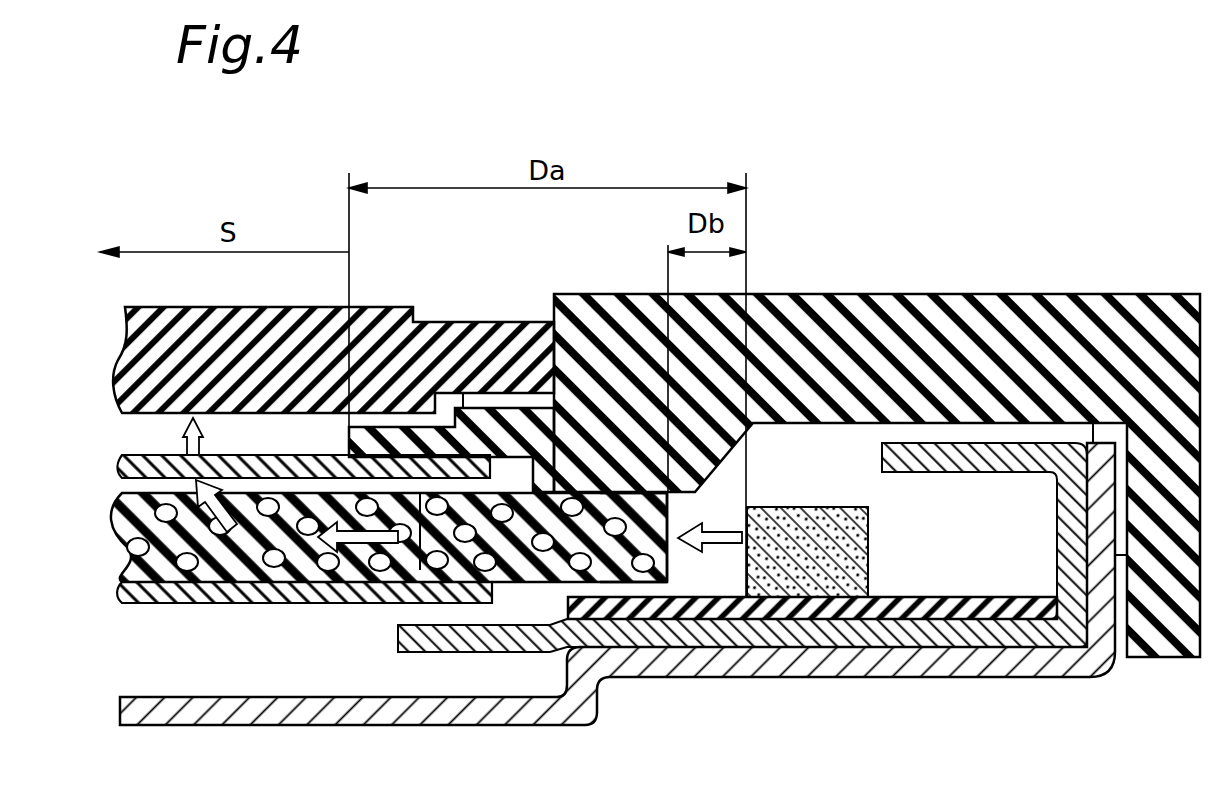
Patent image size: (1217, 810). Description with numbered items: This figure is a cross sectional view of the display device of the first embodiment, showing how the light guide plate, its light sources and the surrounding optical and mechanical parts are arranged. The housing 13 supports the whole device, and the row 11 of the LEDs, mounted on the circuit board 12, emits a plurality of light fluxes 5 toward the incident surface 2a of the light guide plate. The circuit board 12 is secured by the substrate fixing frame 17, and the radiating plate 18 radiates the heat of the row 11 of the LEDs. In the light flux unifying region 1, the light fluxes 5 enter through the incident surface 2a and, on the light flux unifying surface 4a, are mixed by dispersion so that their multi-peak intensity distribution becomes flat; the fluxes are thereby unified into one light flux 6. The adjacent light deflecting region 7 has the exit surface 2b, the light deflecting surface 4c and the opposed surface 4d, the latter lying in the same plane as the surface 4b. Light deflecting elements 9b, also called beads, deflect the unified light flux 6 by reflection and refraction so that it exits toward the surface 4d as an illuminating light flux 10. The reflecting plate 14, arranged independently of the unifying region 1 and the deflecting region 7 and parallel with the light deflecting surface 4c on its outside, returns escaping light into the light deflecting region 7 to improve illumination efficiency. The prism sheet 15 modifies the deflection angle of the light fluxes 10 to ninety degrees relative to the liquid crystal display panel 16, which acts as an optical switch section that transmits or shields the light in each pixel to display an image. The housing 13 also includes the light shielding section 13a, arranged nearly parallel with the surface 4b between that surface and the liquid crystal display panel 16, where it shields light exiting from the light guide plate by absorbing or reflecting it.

The light flux unifying region 1 is at (640, 520).
The incident surface 2a is at (670, 565).
The exit surface 2b is at (405, 560).
The light flux unifying surface 4a is at (518, 583).
The surface 4b is at (612, 493).
The light deflecting surface 4c is at (279, 583).
The surface 4d is at (183, 440).
The light fluxes 5 is at (710, 548).
The unified light flux 6 is at (355, 537).
The light deflecting region 7 is at (122, 540).
The light deflecting element 9b is at (182, 568).
The illuminating light flux 10 is at (210, 523).
The row of the LEDs 11 is at (796, 567).
The circuit board 12 is at (907, 615).
The housing 13 is at (1045, 318).
The light shielding section 13a is at (412, 433).
The reflecting plate 14 is at (122, 598).
The prism sheet 15 is at (125, 463).
The liquid crystal display panel 16 is at (130, 355).
The substrate fixing frame 17 is at (1028, 633).
The radiating plate 18 is at (125, 703).